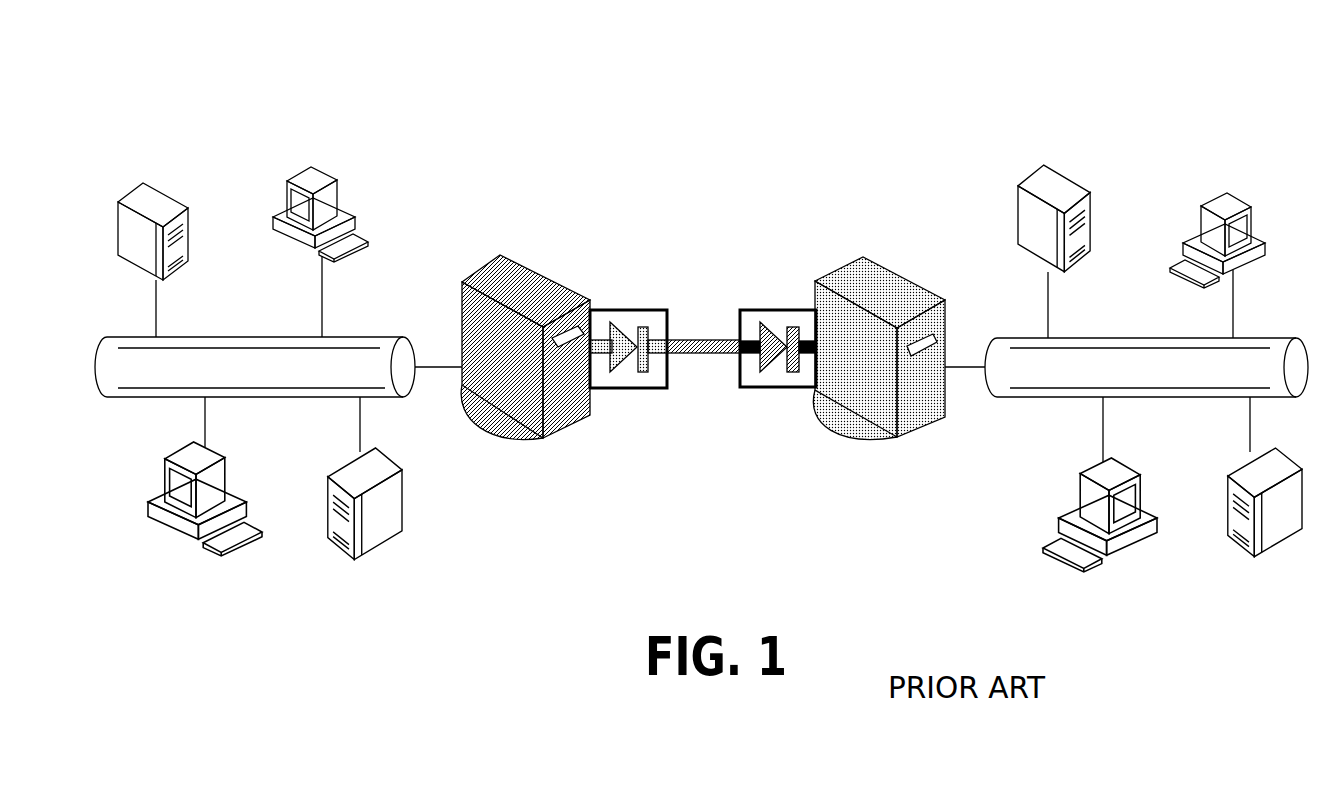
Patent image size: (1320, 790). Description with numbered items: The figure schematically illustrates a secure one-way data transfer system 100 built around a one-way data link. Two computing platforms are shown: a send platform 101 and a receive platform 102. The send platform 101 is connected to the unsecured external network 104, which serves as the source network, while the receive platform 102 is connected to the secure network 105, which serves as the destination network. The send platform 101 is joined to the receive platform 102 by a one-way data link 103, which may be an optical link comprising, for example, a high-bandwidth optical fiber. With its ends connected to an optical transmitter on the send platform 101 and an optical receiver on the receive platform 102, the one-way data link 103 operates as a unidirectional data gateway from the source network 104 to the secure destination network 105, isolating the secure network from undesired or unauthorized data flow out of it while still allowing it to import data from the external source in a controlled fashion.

The one-way data transfer system 100 is at (716, 100).
The send platform 101 is at (530, 280).
The receive platform 102 is at (855, 270).
The one-way data link 103 is at (705, 357).
The unsecured external network 104 is at (236, 368).
The secure network 105 is at (1112, 362).